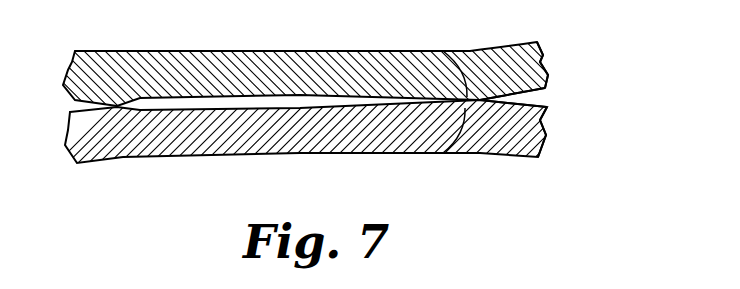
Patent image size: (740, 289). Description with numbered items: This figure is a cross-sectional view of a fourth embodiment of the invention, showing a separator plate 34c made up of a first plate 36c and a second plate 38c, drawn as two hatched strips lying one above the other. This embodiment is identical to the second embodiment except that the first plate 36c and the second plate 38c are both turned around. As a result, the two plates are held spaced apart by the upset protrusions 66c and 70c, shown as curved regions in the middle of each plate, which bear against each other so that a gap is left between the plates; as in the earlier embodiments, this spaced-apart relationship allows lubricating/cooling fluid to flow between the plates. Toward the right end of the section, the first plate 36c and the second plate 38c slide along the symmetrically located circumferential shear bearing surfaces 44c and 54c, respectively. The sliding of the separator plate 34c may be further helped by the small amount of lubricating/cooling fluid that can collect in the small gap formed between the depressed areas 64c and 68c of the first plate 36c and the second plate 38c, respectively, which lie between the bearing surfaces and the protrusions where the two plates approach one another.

The separator plate 34c is at (320, 105).
The first plate 36c is at (253, 51).
The second plate 38c is at (213, 137).
The circumferential shear bearing surface 44c is at (547, 77).
The circumferential shear bearing surface 54c is at (547, 118).
The depressed area 64c is at (538, 97).
The upset protrusion 66c is at (443, 51).
The depressed area 68c is at (538, 100).
The upset protrusion 70c is at (443, 153).